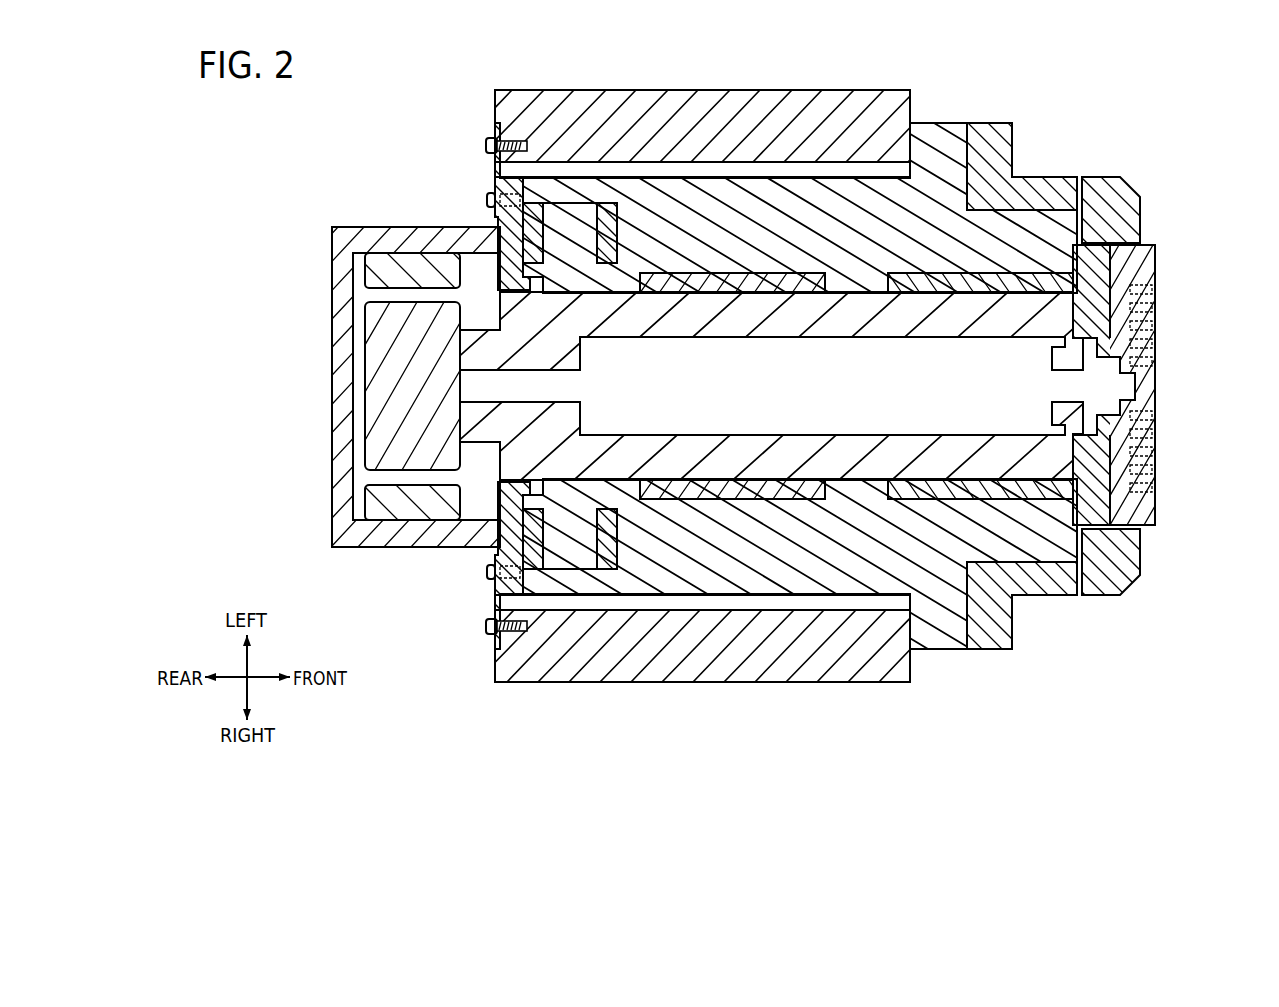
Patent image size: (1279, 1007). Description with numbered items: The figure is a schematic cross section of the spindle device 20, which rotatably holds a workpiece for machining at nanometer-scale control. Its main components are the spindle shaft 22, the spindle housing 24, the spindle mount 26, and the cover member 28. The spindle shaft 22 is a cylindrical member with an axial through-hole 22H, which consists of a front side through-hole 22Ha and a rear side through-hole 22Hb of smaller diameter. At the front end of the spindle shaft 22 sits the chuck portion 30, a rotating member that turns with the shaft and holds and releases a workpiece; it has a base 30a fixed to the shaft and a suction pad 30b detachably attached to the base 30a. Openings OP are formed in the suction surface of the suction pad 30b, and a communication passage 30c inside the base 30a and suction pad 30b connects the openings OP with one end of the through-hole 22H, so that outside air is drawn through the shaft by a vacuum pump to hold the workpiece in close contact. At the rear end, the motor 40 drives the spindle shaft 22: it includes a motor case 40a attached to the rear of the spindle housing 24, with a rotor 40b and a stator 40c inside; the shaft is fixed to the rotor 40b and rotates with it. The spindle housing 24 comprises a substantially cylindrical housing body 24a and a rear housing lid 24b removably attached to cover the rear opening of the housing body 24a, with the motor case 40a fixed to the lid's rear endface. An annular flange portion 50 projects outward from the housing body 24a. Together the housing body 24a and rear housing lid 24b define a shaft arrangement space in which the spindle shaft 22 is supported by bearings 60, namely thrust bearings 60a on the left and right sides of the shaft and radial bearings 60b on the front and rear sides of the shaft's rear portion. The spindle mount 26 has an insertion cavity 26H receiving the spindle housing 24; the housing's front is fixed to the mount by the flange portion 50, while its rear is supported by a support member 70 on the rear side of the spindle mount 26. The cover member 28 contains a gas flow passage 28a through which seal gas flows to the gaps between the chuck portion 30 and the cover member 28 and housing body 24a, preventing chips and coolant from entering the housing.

The spindle device 20 is at (1171, 82).
The spindle shaft 22 is at (848, 325).
The through-hole 22H is at (647, 716).
The front side through-hole 22Ha is at (692, 421).
The rear side through-hole 22Hb is at (514, 396).
The spindle housing 24 is at (982, 674).
The housing body 24a is at (808, 222).
The rear housing lid 24b is at (500, 188).
The spindle mount 26 is at (735, 110).
The insertion cavity 26H is at (522, 170).
The cover member 28 is at (1040, 195).
The gas flow passage 28a is at (1076, 212).
The chuck portion 30 is at (1201, 289).
The base 30a is at (1095, 312).
The suction pad 30b is at (1153, 506).
The communication passage 30c is at (1124, 292).
The openings OP is at (1148, 427).
The motor 40 is at (298, 312).
The motor case 40a is at (337, 342).
The rotor 40b is at (387, 398).
The stator 40c is at (385, 269).
The flange portion 50 is at (942, 133).
The bearings 60 is at (737, 283).
The thrust bearings 60a is at (928, 283).
The radial bearings 60b is at (538, 242).
The support member 70 is at (496, 127).